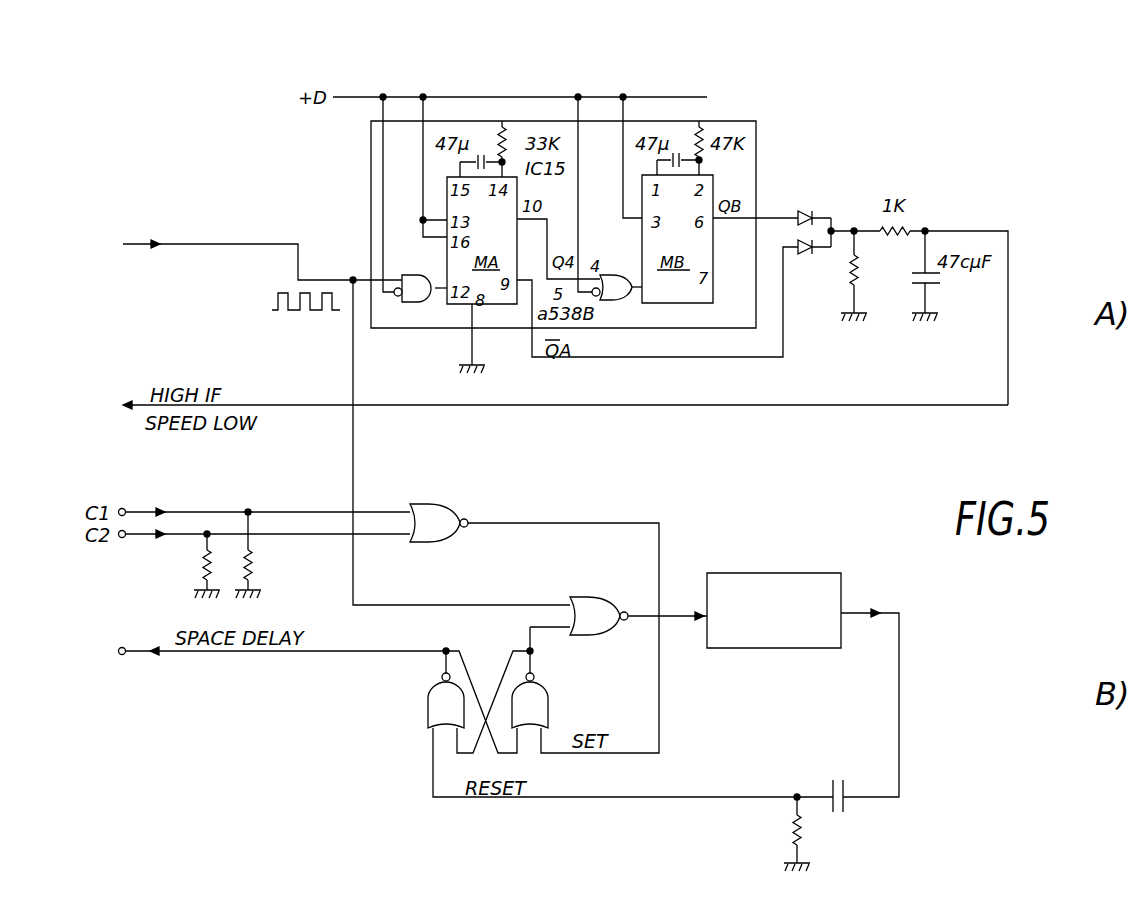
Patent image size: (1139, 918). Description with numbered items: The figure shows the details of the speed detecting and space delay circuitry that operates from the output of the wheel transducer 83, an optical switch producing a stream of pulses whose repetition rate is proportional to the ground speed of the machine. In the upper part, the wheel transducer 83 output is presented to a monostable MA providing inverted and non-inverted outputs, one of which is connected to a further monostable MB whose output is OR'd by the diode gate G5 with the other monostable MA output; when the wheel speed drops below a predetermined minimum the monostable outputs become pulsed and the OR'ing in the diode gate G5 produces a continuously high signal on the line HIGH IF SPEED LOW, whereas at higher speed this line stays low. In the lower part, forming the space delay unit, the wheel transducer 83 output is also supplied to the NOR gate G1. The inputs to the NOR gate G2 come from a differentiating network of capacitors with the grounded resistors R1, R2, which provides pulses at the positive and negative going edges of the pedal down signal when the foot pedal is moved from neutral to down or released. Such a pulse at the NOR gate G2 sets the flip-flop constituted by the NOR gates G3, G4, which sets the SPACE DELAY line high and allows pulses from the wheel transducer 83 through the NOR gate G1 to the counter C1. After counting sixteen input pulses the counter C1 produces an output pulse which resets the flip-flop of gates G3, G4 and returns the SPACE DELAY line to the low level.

In FIG. 5A, the wheel transducer 83 is at (253, 285).
In FIG. 5B, the NOR gate G1 is at (599, 616).
In FIG. 5B, the NOR gate G2 is at (439, 523).
In FIG. 5B, the NOR gate G3 is at (446, 700).
In FIG. 5B, the NOR gate G4 is at (530, 700).
In FIG. 5A, the diode gate G5 is at (813, 216).
In FIG. 5B, the counter C1 is at (774, 597).
In FIG. 5B, the grounded resistor R1 is at (261, 555).
In FIG. 5B, the grounded resistor R2 is at (190, 566).